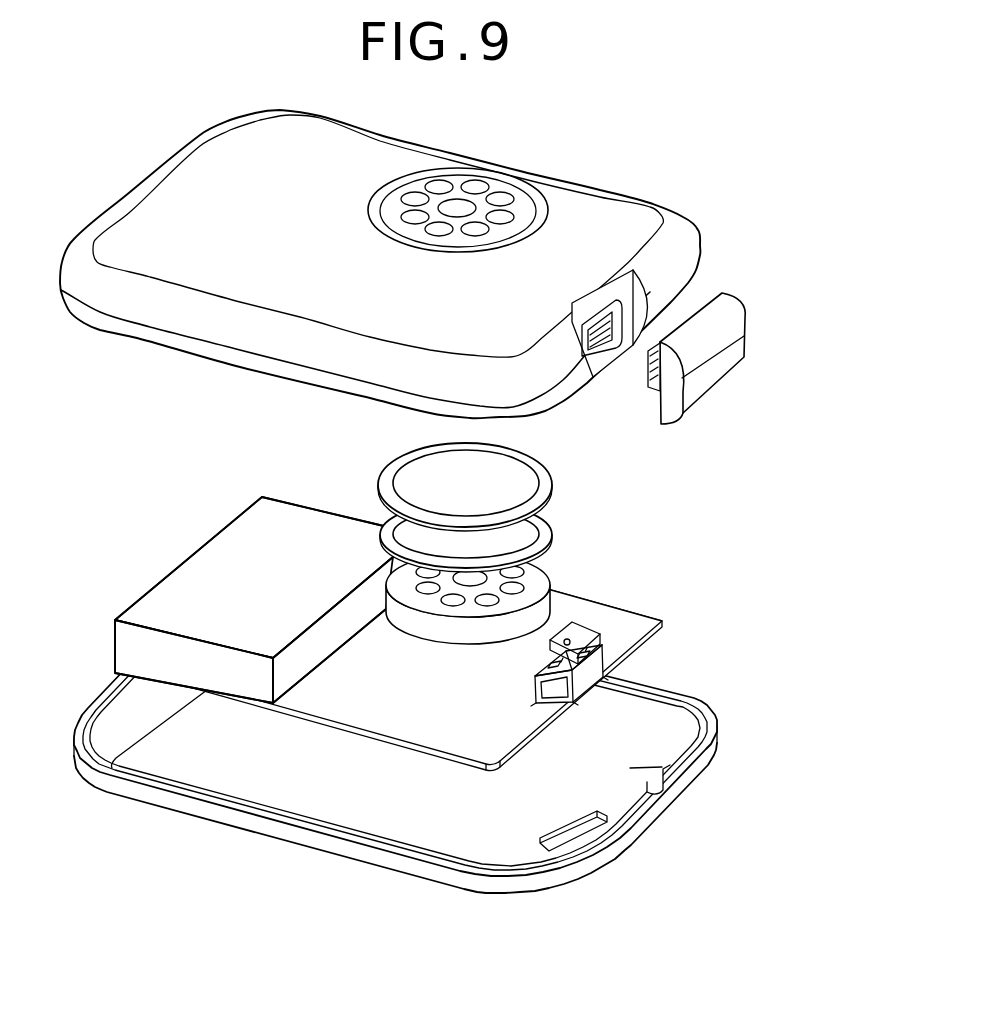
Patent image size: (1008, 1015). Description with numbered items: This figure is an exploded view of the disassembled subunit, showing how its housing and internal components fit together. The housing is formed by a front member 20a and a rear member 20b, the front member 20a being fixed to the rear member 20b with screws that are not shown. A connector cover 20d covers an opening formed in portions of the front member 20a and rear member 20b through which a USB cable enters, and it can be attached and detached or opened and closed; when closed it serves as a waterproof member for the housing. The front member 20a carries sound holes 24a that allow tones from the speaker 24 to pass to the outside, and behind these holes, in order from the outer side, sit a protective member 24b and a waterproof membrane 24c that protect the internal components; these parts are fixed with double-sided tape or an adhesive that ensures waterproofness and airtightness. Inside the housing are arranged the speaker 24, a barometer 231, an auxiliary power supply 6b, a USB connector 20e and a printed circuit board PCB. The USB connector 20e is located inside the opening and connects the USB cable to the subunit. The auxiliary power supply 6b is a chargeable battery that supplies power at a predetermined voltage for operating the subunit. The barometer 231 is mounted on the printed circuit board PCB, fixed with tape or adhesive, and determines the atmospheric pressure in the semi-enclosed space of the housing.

The front member 20a is at (380, 243).
The sound holes 24a is at (503, 193).
The connector cover 20d is at (727, 312).
The protective member 24b is at (540, 487).
The waterproof membrane 24c is at (545, 530).
The speaker 24 is at (547, 598).
The barometer 231 is at (584, 633).
The auxiliary power supply 6b is at (197, 580).
The rear member 20b is at (140, 810).
The printed circuit board PCB is at (365, 738).
The USB connector 20e is at (565, 692).